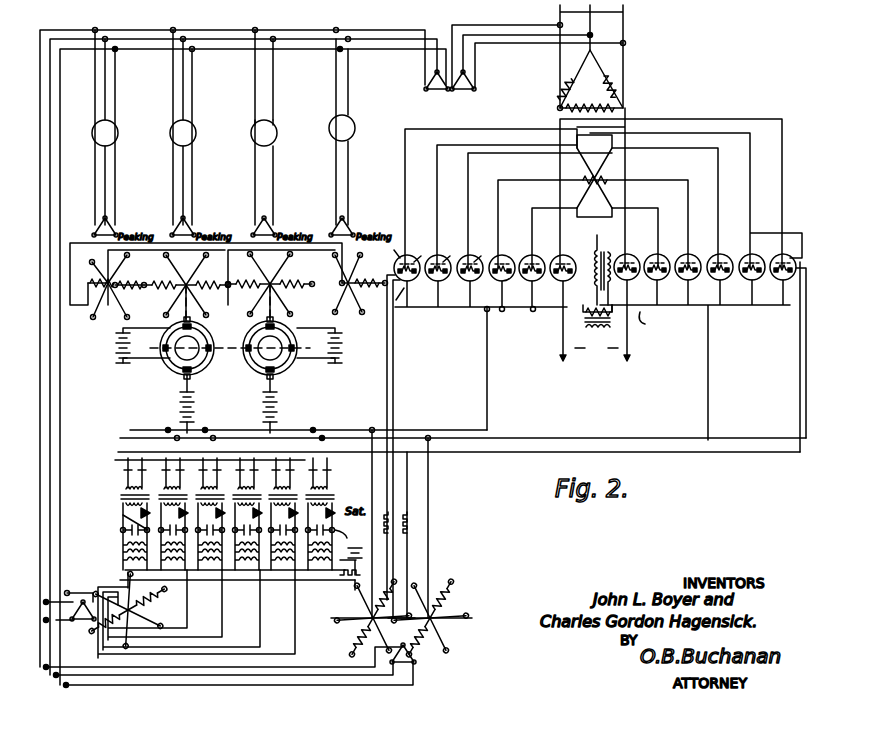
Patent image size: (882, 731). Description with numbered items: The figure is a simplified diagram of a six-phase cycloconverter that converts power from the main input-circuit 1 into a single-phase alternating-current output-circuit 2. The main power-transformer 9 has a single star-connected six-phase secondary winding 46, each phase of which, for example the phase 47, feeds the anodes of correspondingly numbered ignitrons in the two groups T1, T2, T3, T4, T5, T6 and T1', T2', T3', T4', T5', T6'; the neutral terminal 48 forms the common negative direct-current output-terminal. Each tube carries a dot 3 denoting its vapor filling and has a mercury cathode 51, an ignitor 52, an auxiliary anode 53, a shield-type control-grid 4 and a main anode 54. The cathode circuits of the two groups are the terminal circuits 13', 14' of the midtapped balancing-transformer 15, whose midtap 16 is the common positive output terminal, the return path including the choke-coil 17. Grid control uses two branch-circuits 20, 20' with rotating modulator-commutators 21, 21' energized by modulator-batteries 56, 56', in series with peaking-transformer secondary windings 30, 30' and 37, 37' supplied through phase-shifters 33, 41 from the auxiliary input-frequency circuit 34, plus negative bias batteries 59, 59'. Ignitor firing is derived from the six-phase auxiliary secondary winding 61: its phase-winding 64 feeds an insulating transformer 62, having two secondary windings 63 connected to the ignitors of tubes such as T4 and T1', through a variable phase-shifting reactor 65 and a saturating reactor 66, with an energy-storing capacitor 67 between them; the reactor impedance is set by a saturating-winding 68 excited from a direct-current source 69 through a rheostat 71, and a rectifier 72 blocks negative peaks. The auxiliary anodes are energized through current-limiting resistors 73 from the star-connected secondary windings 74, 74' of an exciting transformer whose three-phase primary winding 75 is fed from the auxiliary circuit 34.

The main input-circuit 1 is at (592, 56).
The output-circuit 2 is at (584, 355).
The circle or dot 3 is at (767, 246).
The control-grid 4 is at (530, 248).
The main power-transformer 9 is at (589, 81).
The terminal circuit 13' is at (537, 326).
The terminal circuit 14' is at (651, 322).
The midtapped balancing-transformer 15 is at (597, 329).
The midtap 16 is at (613, 301).
The choke-coil 17 is at (594, 303).
The branch-circuit 20 is at (287, 383).
The branch-circuit 20' is at (205, 384).
The rotating commutator 21 is at (266, 348).
The rotating commutator 21' is at (193, 348).
The 6-phase-connected secondary windings 30 is at (360, 284).
The resistor network 30' is at (100, 286).
The phase-shifter 33 is at (342, 128).
The auxiliary input-frequency polyphase circuit 34 is at (296, 42).
The open-star 6-phase-connected secondary windings 37 is at (270, 284).
The resistor star 37' is at (172, 285).
The phase-shifter 41 is at (264, 133).
The star-connected 6-phase secondary winding 46 is at (580, 203).
The phase 47 is at (592, 171).
The neutral terminal 48 is at (596, 245).
The mercury cathode 51 is at (601, 300).
The ignitor 52 is at (582, 275).
The auxiliary anode 53 is at (555, 283).
The main anode 54 is at (529, 250).
The modulator-battery 56 is at (331, 345).
The modulator-battery 56' is at (131, 345).
The battery 59 is at (283, 412).
The capacitor stack 59' is at (202, 412).
The star-connected 6-phase secondary winding 61 is at (128, 610).
The insulating transformer 62 is at (122, 498).
The secondary winding 63 is at (122, 491).
The phase-winding 64 is at (135, 600).
The variable phase-shifting reactor 65 is at (126, 548).
The saturating reactor 66 is at (138, 518).
The energy-storing capacitor 67 is at (124, 532).
The direct-current saturating-winding 68 is at (345, 537).
The direct-current source 69 is at (363, 556).
The variable rheostat 71 is at (350, 586).
The rectifier 72 is at (122, 478).
The current-limiting resistor 73 is at (390, 513).
The star-connected secondary winding 74 is at (373, 618).
The star-connected secondary winding 74' is at (430, 618).
The 3-phase primary winding 75 is at (412, 660).
The main power-tube T1 is at (502, 278).
The main power-tube T2 is at (470, 278).
The main power-tube T3 is at (438, 278).
The main power-tube T4 is at (407, 278).
The main power-tube T5 is at (563, 278).
The main power-tube T6 is at (532, 278).
The main power-tube T1' is at (783, 275).
The main power-tube T2' is at (752, 275).
The main power-tube T3' is at (720, 275).
The main power-tube T4' is at (688, 275).
The main power-tube T5' is at (657, 275).
The main power-tube T6' is at (627, 275).